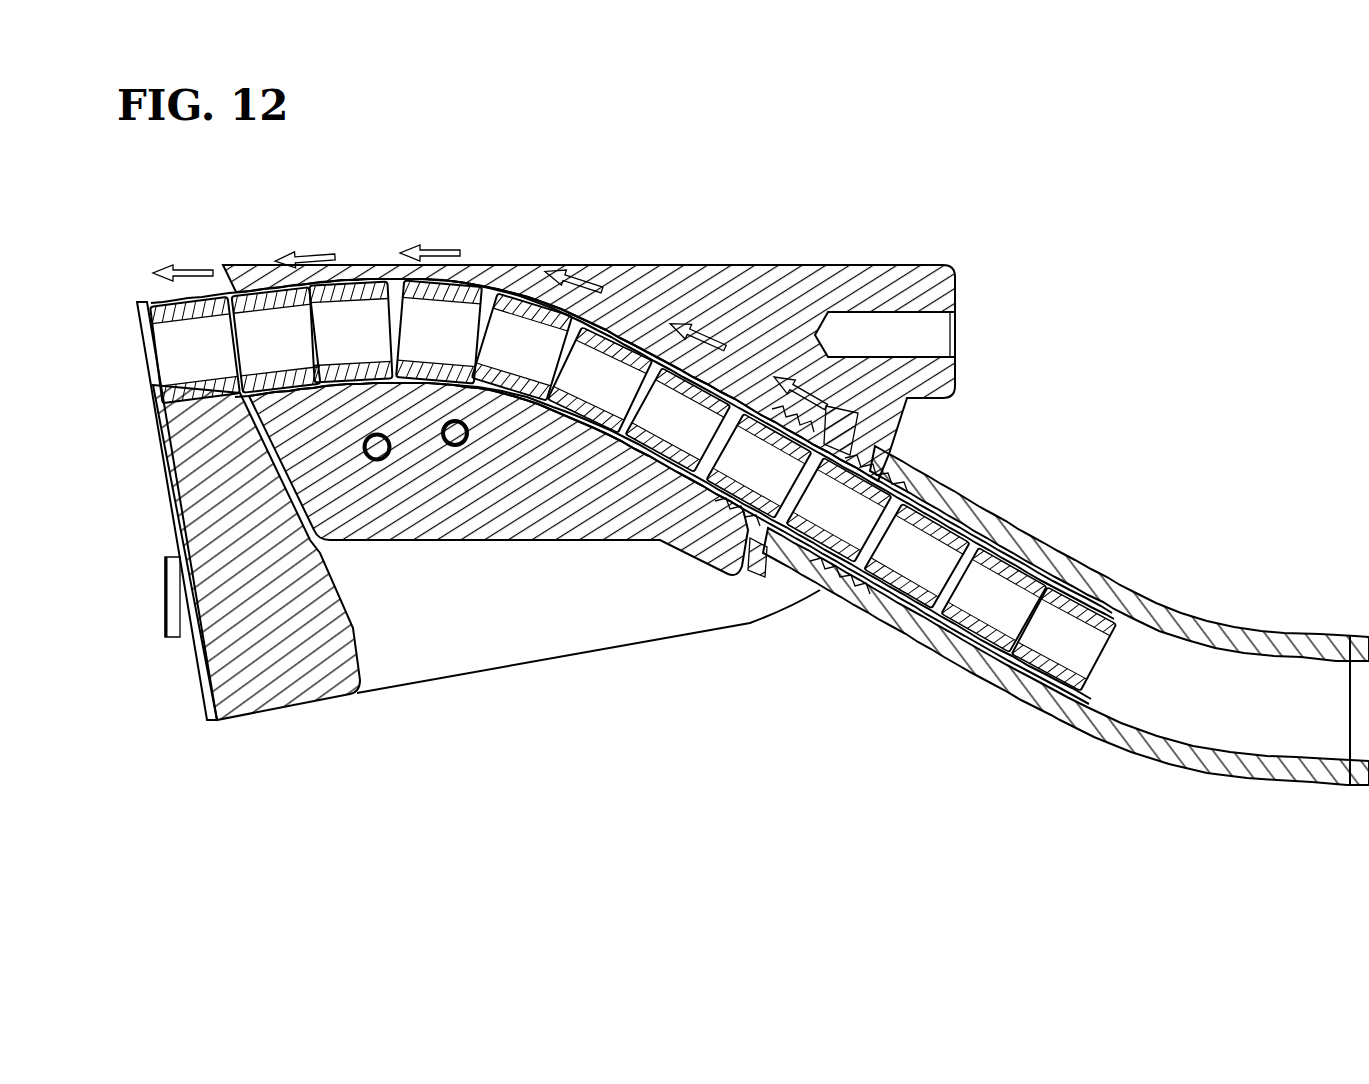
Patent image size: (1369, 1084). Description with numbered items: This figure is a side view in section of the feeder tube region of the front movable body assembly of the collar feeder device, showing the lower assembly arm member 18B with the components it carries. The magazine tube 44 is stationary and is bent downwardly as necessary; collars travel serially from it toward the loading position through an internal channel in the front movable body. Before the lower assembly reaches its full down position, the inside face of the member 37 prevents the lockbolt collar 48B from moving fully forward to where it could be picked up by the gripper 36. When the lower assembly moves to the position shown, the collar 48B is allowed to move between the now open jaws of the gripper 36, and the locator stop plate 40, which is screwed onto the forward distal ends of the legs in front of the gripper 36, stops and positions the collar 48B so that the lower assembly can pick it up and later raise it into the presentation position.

The lower assembly arm member 18B is at (658, 606).
The gripper 36 is at (172, 597).
The member 37 is at (242, 682).
The stop plate 40 is at (158, 430).
The collar magazine tube 44 is at (1210, 621).
The lockbolt collar 48B is at (188, 373).